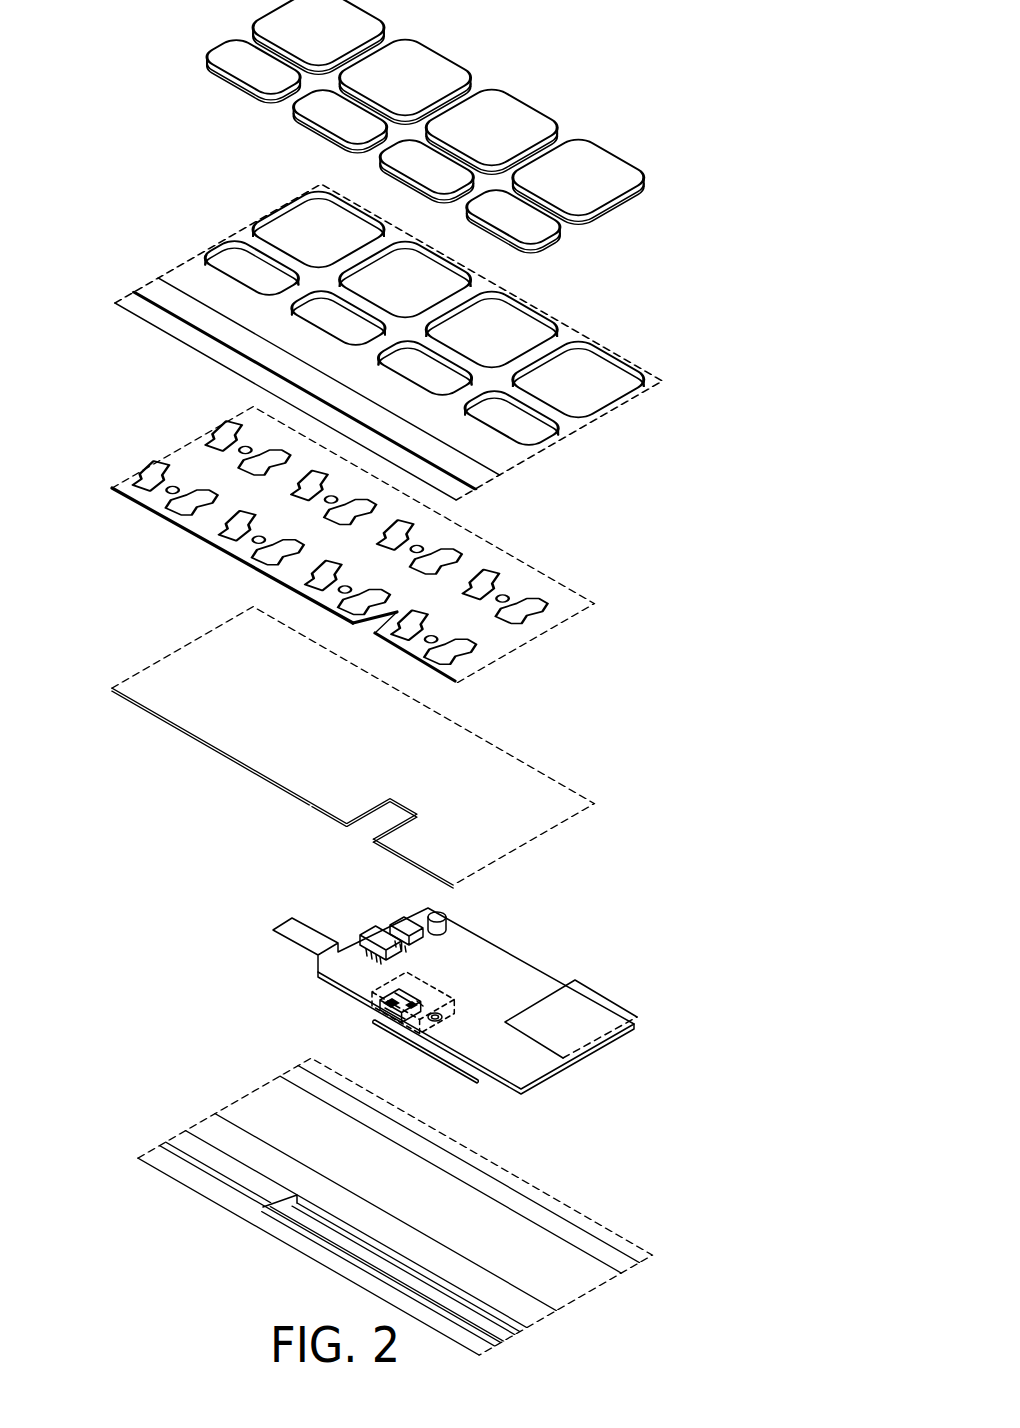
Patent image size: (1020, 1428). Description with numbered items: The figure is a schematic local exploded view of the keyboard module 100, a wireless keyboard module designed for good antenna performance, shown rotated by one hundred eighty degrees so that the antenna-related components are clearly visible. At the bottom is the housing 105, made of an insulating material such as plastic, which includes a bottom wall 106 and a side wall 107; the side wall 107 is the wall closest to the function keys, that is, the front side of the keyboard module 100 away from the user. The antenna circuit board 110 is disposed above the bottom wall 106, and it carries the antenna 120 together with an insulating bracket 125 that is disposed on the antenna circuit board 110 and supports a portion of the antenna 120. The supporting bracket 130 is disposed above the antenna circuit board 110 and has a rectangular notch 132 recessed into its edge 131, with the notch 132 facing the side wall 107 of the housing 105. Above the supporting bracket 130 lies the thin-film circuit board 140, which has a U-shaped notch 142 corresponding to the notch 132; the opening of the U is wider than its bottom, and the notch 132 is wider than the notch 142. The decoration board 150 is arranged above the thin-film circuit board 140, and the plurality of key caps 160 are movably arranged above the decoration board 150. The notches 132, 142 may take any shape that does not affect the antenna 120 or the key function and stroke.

The keyboard module 100 is at (386, 677).
The housing 105 is at (353, 1206).
The bottom wall 106 is at (250, 1108).
The side wall 107 is at (277, 1230).
The antenna circuit board 110 is at (455, 1007).
The antenna 120 is at (384, 1035).
The insulating bracket 125 is at (423, 1005).
The supporting bracket 130 is at (353, 779).
The edge 131 is at (238, 764).
The notch 132 is at (370, 828).
The thin-film circuit board 140 is at (351, 584).
The notch 142 is at (414, 650).
The decoration board 150 is at (490, 446).
The key caps 160 is at (233, 83).